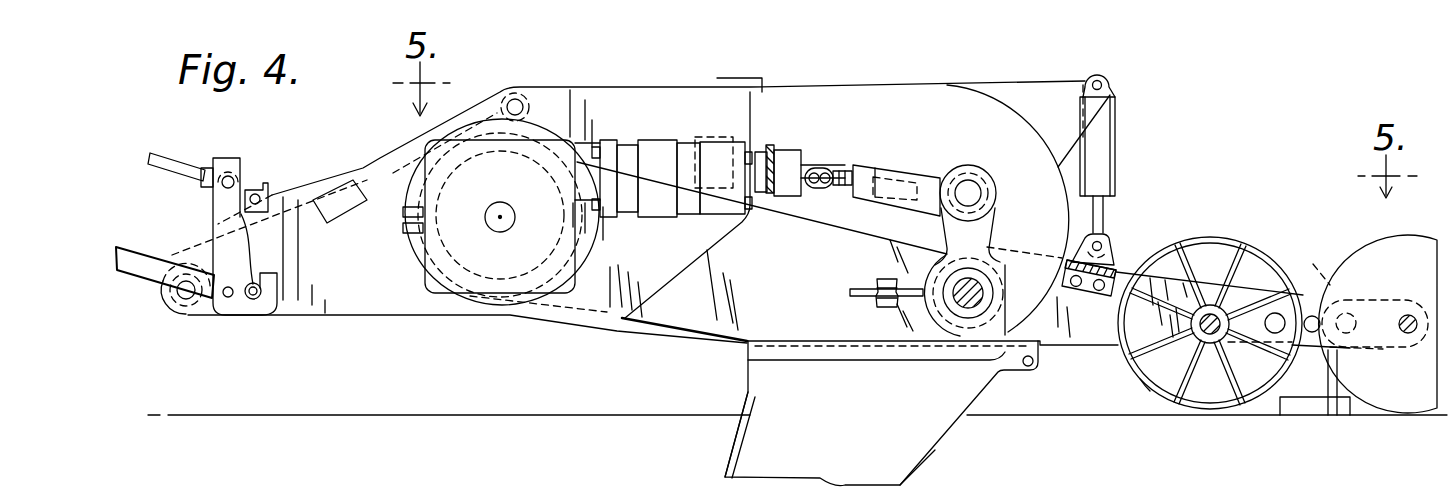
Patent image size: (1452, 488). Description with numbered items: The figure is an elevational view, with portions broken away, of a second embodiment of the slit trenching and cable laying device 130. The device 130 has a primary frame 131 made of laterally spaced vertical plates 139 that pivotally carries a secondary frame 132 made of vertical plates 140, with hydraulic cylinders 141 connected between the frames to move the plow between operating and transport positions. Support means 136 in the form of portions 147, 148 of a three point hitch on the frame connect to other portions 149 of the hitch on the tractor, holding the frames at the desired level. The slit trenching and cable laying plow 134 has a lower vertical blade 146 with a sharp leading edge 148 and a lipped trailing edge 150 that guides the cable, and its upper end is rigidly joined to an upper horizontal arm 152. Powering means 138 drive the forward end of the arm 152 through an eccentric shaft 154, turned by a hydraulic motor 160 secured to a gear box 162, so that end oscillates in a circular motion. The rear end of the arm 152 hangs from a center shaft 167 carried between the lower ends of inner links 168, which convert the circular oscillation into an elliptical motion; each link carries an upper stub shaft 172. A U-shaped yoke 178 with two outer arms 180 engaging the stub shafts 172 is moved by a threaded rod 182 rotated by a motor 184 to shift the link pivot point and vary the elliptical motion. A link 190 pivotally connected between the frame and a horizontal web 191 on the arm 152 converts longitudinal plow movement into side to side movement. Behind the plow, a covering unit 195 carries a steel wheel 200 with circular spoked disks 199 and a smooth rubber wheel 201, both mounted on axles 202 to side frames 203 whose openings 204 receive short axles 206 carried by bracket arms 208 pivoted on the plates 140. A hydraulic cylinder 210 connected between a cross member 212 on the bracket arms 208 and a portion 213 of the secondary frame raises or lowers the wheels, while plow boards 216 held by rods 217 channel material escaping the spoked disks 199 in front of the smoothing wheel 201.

The slit trenching and cable laying device 130 is at (1148, 131).
The primary frame 131 is at (316, 325).
The secondary frame 132 is at (659, 80).
The slit trenching and cable laying plow 134 is at (947, 444).
The support means 136 is at (165, 313).
The powering means 138 is at (432, 306).
The vertical plates 139 is at (318, 273).
The vertical plates 140 is at (923, 97).
The hydraulic cylinders 141 is at (312, 208).
The lower vertical blade 146 is at (815, 453).
The three point hitch portion 147 is at (253, 192).
The three point hitch portion / sharp leading edge 148 is at (252, 301).
The three point hitch portions on tractor 149 is at (142, 240).
The lipped trailing edge 150 is at (927, 471).
The upper horizontal arm 152 is at (678, 294).
The eccentric shaft 154 is at (500, 217).
The hydraulic motor 160 is at (658, 157).
The gear box 162 is at (560, 233).
The center shaft 167 is at (963, 305).
The inner connectors or links 168 is at (987, 230).
The upper stub shaft 172 is at (974, 192).
The U-shaped yoke 178 is at (868, 167).
The outer arms 180 is at (930, 175).
The threaded rod 182 is at (837, 172).
The motor 184 is at (764, 144).
The link 190 is at (877, 302).
The horizontal web 191 is at (864, 290).
The covering unit 195 is at (1193, 225).
The circular spoked disks 199 is at (1140, 379).
The wheel 200 is at (1250, 248).
The wheel 201 is at (1372, 253).
The axles 202 is at (1212, 305).
The side frames 203 is at (1397, 344).
The openings 204 is at (1283, 307).
The short axles 206 is at (1334, 340).
The bracket arms 208 is at (1070, 340).
The hydraulic cylinder 210 is at (1117, 108).
The cross member 212 is at (1120, 268).
The portion of the secondary frame 213 is at (1045, 90).
The plow boards 216 is at (1297, 407).
The rods 217 is at (1332, 381).